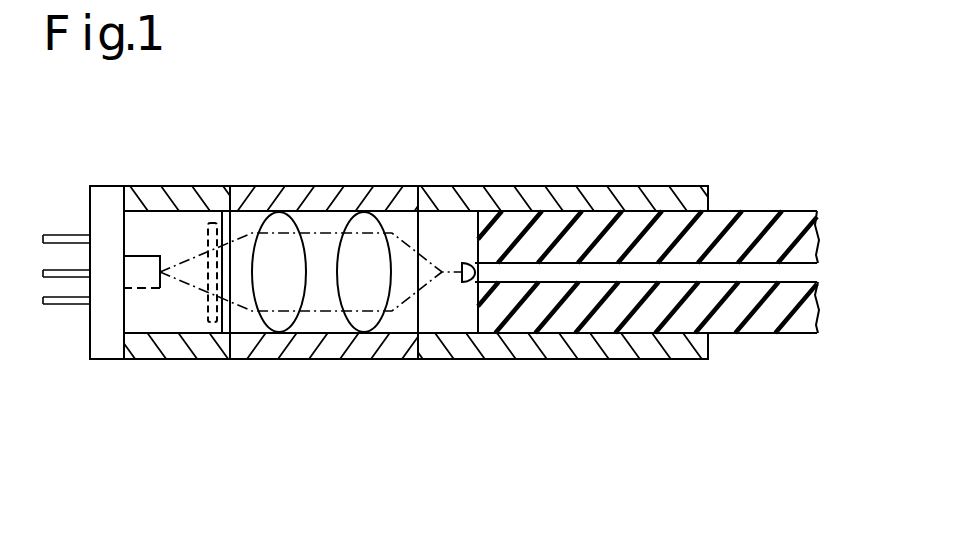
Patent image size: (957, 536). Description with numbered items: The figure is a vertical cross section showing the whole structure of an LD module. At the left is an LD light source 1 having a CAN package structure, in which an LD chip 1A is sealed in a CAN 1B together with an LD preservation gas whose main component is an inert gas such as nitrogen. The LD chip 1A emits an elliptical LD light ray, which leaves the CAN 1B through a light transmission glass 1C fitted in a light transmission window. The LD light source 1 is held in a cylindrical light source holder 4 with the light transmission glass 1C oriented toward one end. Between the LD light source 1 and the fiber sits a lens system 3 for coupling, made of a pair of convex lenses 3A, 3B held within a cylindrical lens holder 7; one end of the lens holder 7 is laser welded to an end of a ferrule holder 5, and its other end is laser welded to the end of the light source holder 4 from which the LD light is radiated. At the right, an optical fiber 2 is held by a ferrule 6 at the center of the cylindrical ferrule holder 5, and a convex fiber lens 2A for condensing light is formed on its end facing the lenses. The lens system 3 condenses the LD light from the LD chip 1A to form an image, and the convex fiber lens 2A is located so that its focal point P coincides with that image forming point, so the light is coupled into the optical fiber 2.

The LD light source 1 is at (174, 196).
The LD chip 1A is at (134, 255).
The CAN 1B is at (135, 313).
The light transmission glass 1C is at (212, 325).
The optical fiber 2 is at (753, 273).
The convex fiber lens 2A is at (461, 262).
The lens system 3 is at (321, 192).
The convex lens 3A is at (257, 225).
The convex lens 3B is at (346, 222).
The light source holder 4 is at (157, 359).
The ferrule holder 5 is at (537, 359).
The ferrule 6 is at (745, 335).
The lens holder 7 is at (327, 359).
The focal point P is at (440, 274).